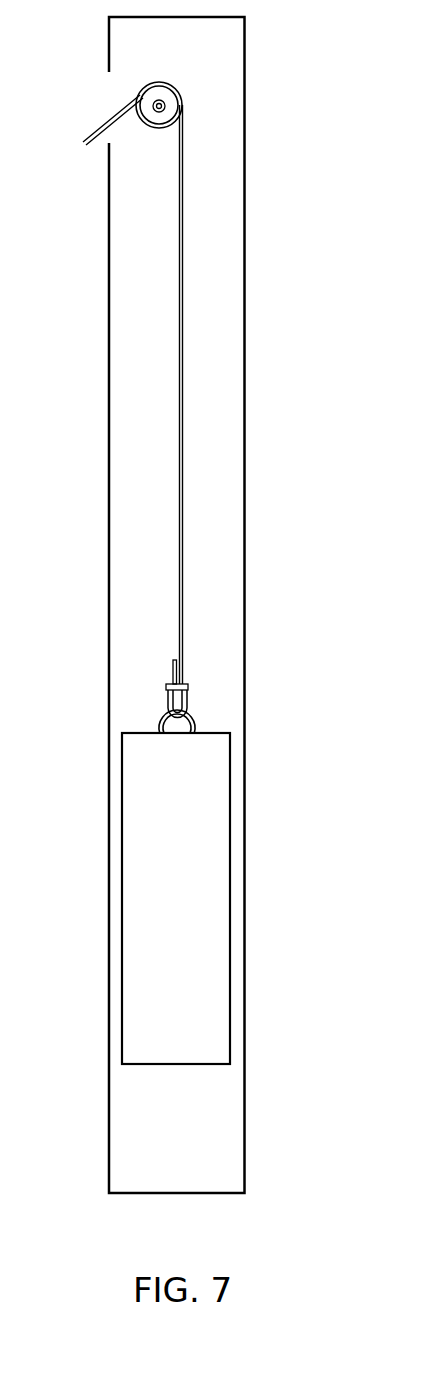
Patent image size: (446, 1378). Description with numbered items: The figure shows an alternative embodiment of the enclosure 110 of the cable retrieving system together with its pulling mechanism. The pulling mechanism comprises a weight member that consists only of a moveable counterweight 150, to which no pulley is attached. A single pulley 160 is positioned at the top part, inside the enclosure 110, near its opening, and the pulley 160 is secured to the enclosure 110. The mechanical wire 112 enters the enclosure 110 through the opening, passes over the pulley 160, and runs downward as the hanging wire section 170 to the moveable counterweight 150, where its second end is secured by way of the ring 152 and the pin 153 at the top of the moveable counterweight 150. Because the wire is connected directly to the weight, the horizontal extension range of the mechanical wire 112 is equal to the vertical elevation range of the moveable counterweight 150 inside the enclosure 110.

The enclosure 110 is at (228, 392).
The mechanical wire 112 is at (100, 128).
The moveable counterweight 150 is at (220, 1019).
The ring / shackle 152 is at (195, 717).
The pin / clamp 153 is at (167, 684).
The pulley 160 is at (160, 127).
The rope / cable 170 is at (183, 292).